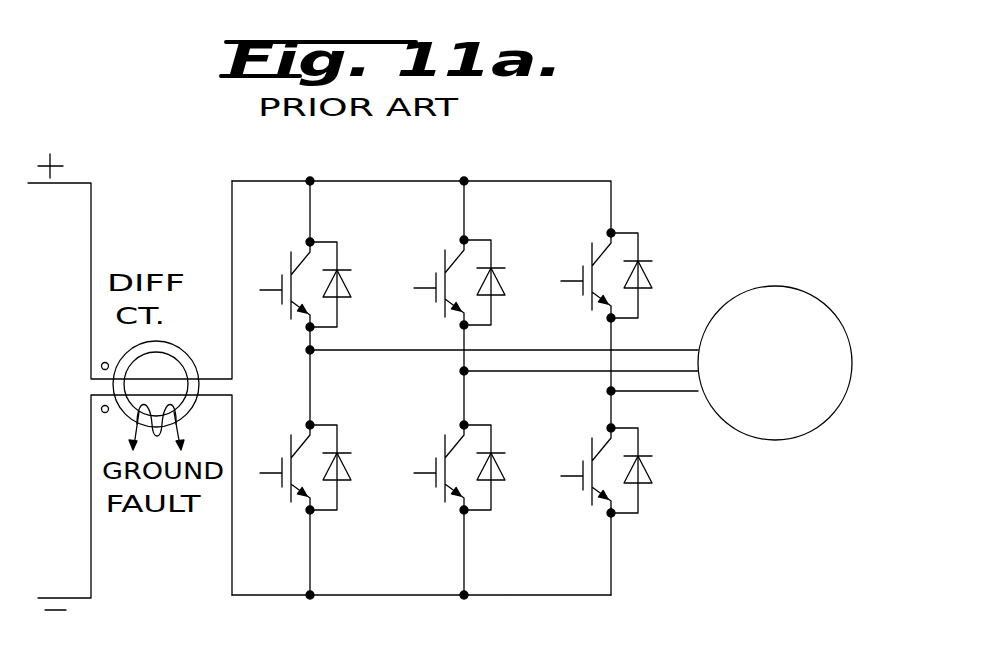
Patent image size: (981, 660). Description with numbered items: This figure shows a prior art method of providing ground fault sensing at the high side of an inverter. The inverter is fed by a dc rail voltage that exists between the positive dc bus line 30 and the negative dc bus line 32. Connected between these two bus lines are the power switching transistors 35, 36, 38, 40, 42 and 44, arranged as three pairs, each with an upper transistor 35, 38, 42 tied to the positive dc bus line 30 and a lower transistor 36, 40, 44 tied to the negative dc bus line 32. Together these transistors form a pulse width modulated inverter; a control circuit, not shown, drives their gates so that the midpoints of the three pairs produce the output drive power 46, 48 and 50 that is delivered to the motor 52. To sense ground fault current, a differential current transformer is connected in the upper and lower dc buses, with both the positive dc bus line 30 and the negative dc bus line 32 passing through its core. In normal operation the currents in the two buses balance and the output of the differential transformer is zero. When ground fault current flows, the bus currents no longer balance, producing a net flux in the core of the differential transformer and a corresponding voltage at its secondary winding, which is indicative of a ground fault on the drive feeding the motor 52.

The positive dc bus line 30 is at (570, 178).
The negative dc bus line 32 is at (518, 593).
The power switching transistor 35 is at (325, 257).
The power switching transistor 36 is at (327, 483).
The power switching transistor 38 is at (478, 253).
The power switching transistor 40 is at (477, 490).
The power switching transistor 42 is at (628, 253).
The power switching transistor 44 is at (627, 495).
The output drive power 46 is at (550, 348).
The output drive power 48 is at (502, 372).
The output drive power 50 is at (658, 393).
The motor 52 is at (777, 441).